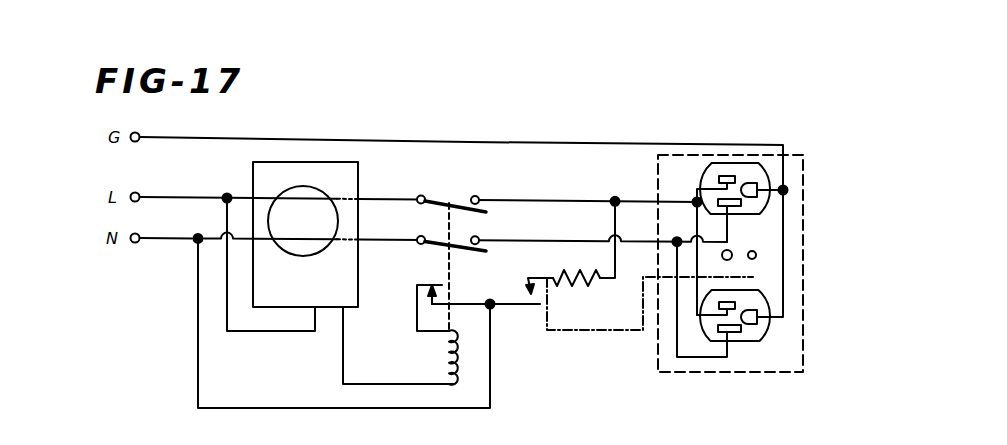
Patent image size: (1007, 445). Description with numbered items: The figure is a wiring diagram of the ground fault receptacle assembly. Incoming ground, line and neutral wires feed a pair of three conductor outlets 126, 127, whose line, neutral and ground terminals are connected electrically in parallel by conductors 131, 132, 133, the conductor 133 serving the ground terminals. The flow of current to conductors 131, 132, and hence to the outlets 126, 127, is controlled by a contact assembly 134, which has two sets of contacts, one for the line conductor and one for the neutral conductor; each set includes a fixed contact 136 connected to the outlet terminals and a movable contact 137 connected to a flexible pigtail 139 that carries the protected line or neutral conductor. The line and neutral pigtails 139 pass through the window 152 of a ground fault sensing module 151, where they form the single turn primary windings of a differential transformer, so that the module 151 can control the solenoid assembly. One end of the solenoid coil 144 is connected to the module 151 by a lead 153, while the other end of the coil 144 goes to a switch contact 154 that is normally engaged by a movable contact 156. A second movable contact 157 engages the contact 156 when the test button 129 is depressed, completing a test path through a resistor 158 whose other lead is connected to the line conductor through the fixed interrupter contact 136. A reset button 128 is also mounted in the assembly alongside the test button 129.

The three conductor outlet 126 is at (737, 163).
The three conductor outlet 127 is at (766, 314).
The reset button 128 is at (731, 252).
The test button 129 is at (756, 255).
The conductor 131 is at (583, 195).
The conductor 132 is at (583, 222).
The conductor 133 is at (803, 242).
The contact assembly 134 is at (473, 247).
The fixed contact 136 is at (479, 236).
The movable contact 137 is at (432, 199).
The flexible pigtail 139 is at (404, 237).
The solenoid coil 144 is at (443, 357).
The ground fault sensing module 151 is at (358, 171).
The window 152 is at (292, 253).
The lead 153 is at (347, 358).
The switch contact 154 is at (430, 283).
The movable contact 156 is at (472, 300).
The second movable contact 157 is at (521, 289).
The resistor 158 is at (578, 280).